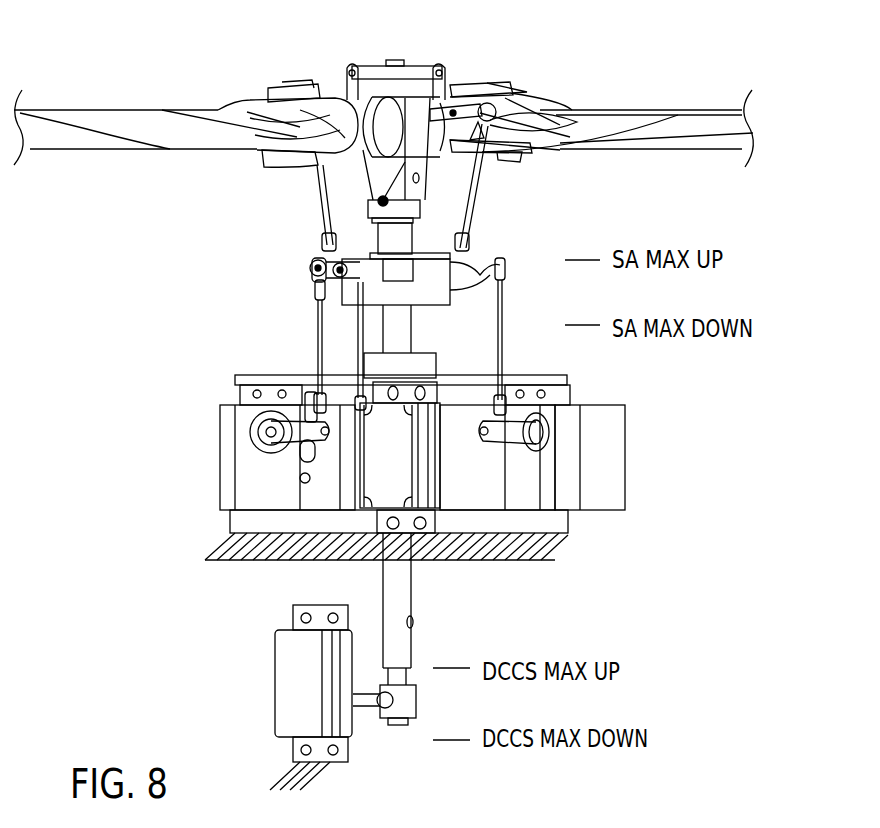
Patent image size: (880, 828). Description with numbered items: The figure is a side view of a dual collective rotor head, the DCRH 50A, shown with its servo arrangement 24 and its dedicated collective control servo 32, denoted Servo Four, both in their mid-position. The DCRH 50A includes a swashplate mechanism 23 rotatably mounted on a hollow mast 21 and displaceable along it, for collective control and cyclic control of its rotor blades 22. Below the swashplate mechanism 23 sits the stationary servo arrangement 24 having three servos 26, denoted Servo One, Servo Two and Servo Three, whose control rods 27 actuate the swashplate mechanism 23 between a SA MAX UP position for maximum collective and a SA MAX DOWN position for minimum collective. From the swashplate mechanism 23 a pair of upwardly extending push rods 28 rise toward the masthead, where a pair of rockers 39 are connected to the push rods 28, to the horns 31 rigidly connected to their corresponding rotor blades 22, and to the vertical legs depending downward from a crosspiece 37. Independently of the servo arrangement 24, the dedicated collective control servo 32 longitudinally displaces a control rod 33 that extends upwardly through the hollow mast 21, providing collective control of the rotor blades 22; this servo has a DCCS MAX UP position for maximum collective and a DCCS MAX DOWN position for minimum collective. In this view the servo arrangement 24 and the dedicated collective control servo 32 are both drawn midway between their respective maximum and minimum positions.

The DCRH 50A is at (133, 31).
The rotor blades 22 is at (688, 146).
The horns 31 is at (525, 125).
The crosspiece 37 is at (416, 74).
The rockers 39 is at (472, 112).
The push rods 28 is at (470, 185).
The swashplate mechanism 23 is at (252, 265).
The control rods 27 is at (505, 325).
The mast 21 is at (405, 328).
The servo arrangement 24 is at (136, 435).
The servos 26 is at (252, 482).
The control rod 33 is at (405, 678).
The dedicated collective control servo 32 is at (283, 675).